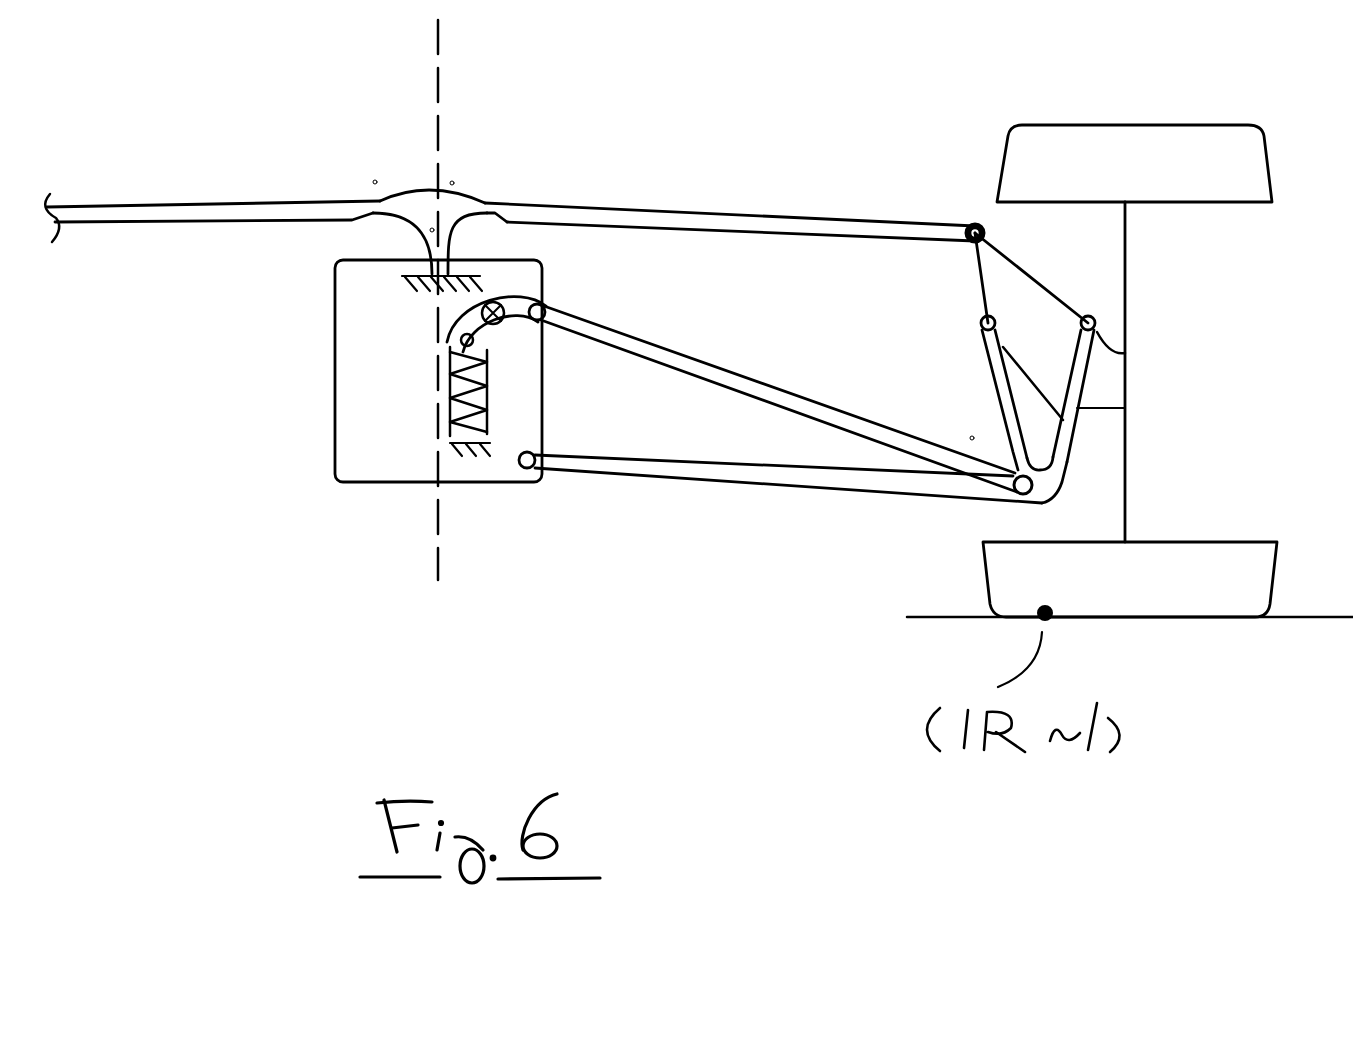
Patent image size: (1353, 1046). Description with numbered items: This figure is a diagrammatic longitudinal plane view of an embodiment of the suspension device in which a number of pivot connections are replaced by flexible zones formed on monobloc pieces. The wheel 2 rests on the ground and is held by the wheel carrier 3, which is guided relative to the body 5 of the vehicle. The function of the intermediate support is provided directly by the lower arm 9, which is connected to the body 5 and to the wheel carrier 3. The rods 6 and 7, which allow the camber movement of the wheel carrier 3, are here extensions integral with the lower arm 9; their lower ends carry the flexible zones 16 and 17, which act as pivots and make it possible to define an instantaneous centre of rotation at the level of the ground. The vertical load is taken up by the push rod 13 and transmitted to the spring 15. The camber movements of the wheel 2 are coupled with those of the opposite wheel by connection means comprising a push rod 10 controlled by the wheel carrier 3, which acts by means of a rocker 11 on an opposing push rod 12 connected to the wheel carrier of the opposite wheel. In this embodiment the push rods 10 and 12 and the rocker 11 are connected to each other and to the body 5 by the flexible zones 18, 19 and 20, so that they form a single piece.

The wheel 2 is at (1125, 297).
The wheel carrier 3 is at (1052, 313).
The body 5 is at (355, 432).
The rod 6 is at (1075, 420).
The rod 7 is at (997, 372).
The lower arm 9 is at (813, 477).
The push rod 10 is at (677, 218).
The rocker 11 is at (453, 210).
The opposing push rod 12 is at (155, 217).
The push rod 13 is at (713, 375).
The spring 15 is at (490, 397).
The flexible zone 16 is at (1078, 463).
The flexible zone 17 is at (966, 435).
The flexible zone 18 is at (370, 174).
The flexible zone 19 is at (447, 177).
The flexible zone 20 is at (428, 224).